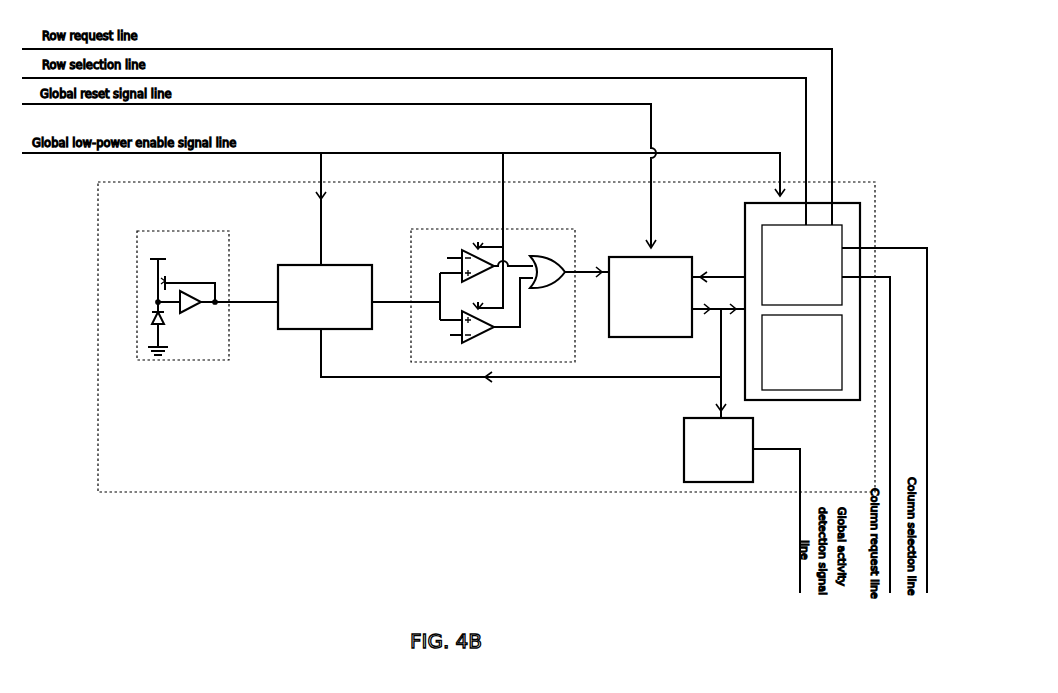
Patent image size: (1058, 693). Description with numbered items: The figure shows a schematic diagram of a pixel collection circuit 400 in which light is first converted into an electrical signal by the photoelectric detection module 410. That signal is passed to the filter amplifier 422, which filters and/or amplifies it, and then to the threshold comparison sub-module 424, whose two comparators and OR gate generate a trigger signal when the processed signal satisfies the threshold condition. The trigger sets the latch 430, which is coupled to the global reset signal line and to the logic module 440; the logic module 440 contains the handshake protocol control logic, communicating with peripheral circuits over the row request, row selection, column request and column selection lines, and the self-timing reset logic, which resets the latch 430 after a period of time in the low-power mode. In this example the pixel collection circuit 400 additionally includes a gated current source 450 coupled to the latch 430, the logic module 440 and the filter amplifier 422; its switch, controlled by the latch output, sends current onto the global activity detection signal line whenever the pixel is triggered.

The pixel collection circuit 400 is at (89, 226).
The photoelectric detection module 410 is at (207, 296).
The filter amplifier 422 is at (499, 323).
The threshold comparison sub-module 424 is at (510, 295).
The latch 430 is at (677, 297).
The logic module 440 is at (836, 398).
The gated current source 450 is at (742, 451).